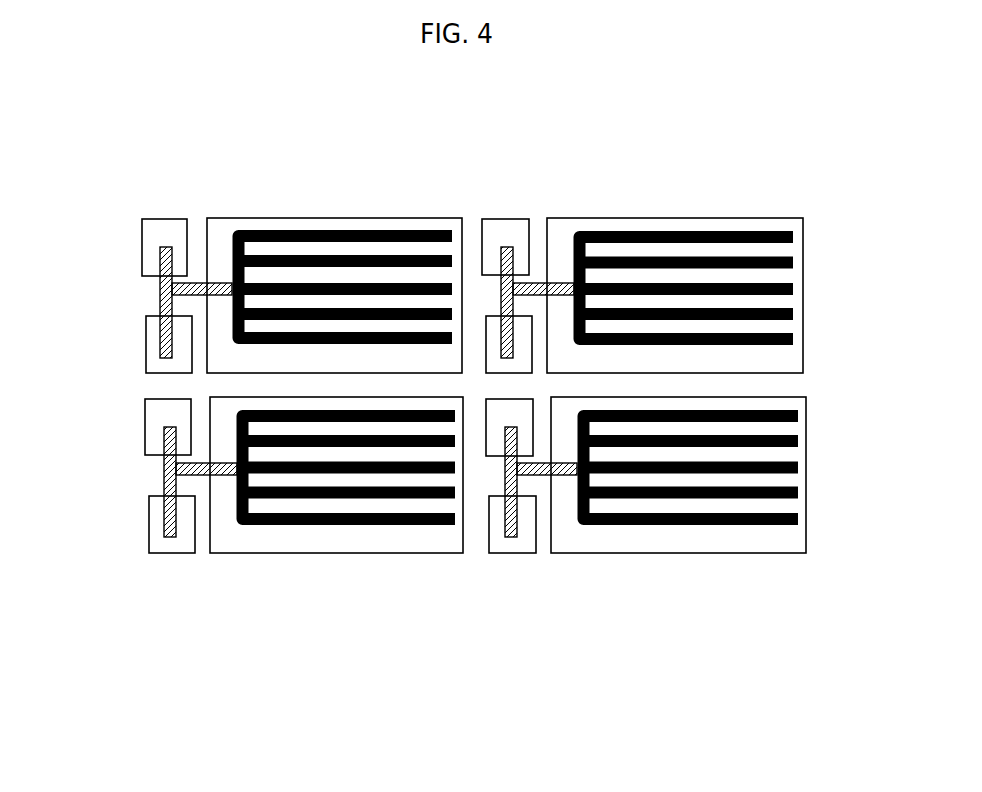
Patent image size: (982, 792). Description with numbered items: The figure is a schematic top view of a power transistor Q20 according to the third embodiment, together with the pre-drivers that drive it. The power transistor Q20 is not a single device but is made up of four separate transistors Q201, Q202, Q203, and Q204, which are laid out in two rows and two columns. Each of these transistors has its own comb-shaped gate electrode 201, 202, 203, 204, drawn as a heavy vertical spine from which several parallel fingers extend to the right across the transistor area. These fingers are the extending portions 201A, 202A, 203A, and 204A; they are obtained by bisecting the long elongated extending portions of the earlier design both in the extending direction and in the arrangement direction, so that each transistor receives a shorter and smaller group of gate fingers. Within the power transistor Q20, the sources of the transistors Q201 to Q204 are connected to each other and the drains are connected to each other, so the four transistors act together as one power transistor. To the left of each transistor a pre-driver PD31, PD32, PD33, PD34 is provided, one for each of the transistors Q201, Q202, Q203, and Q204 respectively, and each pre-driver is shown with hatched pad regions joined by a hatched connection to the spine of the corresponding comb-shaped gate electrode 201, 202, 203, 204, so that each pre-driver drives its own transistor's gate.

The power transistor Q20 is at (688, 140).
The pre-driver PD31 is at (145, 206).
The pre-driver PD32 is at (498, 205).
The pre-driver PD33 is at (177, 558).
The pre-driver PD34 is at (518, 563).
The transistor Q201 is at (368, 218).
The transistor Q202 is at (762, 218).
The transistor Q203 is at (382, 553).
The transistor Q204 is at (725, 553).
The comb-shaped gate electrode 201 is at (242, 231).
The comb-shaped gate electrode 202 is at (620, 231).
The comb-shaped gate electrode 203 is at (264, 525).
The comb-shaped gate electrode 204 is at (606, 524).
The extending portion 201A is at (410, 230).
The extending portion 202A is at (707, 231).
The extending portion 203A is at (438, 525).
The extending portion 204A is at (778, 524).